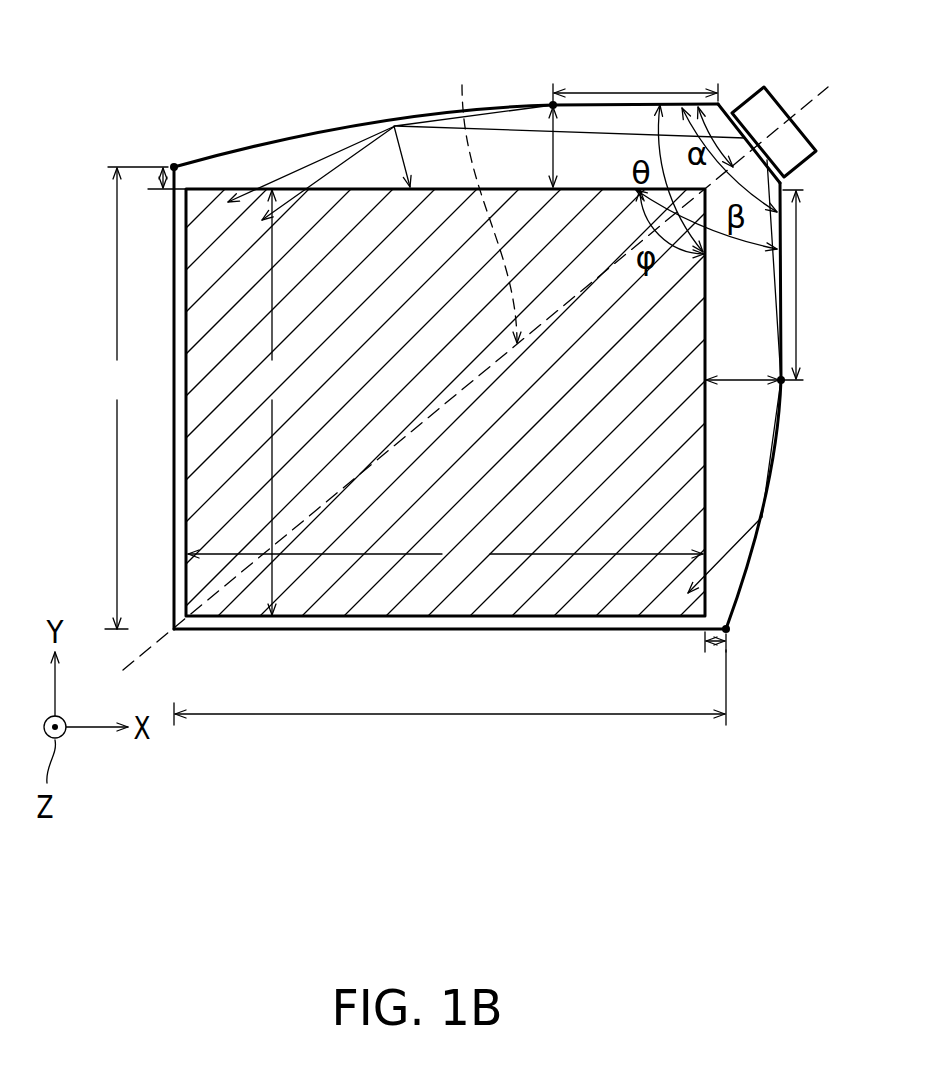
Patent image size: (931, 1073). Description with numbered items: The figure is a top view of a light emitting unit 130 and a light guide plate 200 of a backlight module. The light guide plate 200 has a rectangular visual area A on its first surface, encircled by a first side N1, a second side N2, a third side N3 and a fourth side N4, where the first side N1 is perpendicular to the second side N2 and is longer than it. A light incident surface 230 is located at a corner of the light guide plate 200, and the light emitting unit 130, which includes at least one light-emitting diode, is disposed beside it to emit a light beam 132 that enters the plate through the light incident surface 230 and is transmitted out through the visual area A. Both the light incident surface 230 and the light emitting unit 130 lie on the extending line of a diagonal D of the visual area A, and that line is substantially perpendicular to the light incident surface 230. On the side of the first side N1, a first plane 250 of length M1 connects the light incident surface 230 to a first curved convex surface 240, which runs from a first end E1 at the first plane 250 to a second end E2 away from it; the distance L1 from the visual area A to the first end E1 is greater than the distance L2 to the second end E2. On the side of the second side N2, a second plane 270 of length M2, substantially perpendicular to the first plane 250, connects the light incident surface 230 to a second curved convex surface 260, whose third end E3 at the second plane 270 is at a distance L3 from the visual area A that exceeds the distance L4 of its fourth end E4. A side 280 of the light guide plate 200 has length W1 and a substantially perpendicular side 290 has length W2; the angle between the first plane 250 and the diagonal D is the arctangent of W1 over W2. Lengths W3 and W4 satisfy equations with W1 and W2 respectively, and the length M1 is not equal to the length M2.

The light emitting unit 130 is at (772, 94).
The light beam 132 is at (686, 113).
The light guide plate 200 is at (492, 362).
The light incident surface 230 is at (728, 111).
The first curved convex surface 240 is at (345, 128).
The first plane 250 is at (653, 102).
The second curved convex surface 260 is at (766, 519).
The second plane 270 is at (786, 272).
The side 280 is at (171, 445).
The side 290 is at (292, 632).
The visual area A is at (529, 622).
The diagonal D is at (487, 196).
The first end E1 is at (551, 103).
The second end E2 is at (174, 164).
The third end E3 is at (788, 384).
The fourth end E4 is at (730, 631).
The first side N1 is at (394, 126).
The second side N2 is at (708, 440).
The third side N3 is at (356, 621).
The fourth side N4 is at (183, 345).
The length of side 280 W1 is at (125, 398).
The length of side 290 W2 is at (450, 705).
The length W3 is at (273, 402).
The length W4 is at (445, 553).
The distance L1 is at (569, 147).
The distance L2 is at (157, 176).
The distance L3 is at (742, 362).
The distance L4 is at (716, 661).
The length of the first plane M1 is at (635, 80).
The length of the second plane M2 is at (806, 285).